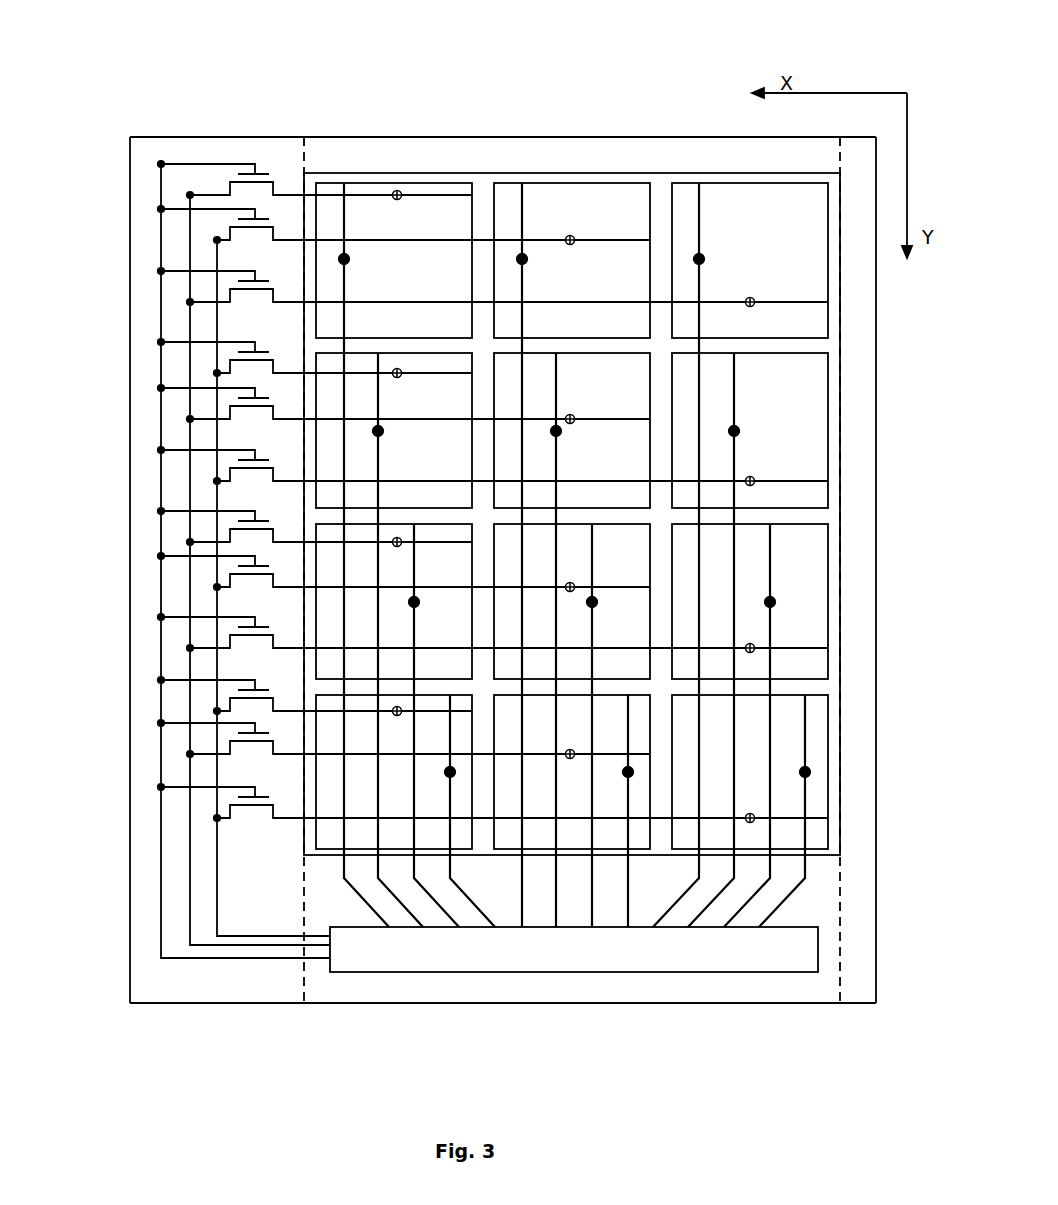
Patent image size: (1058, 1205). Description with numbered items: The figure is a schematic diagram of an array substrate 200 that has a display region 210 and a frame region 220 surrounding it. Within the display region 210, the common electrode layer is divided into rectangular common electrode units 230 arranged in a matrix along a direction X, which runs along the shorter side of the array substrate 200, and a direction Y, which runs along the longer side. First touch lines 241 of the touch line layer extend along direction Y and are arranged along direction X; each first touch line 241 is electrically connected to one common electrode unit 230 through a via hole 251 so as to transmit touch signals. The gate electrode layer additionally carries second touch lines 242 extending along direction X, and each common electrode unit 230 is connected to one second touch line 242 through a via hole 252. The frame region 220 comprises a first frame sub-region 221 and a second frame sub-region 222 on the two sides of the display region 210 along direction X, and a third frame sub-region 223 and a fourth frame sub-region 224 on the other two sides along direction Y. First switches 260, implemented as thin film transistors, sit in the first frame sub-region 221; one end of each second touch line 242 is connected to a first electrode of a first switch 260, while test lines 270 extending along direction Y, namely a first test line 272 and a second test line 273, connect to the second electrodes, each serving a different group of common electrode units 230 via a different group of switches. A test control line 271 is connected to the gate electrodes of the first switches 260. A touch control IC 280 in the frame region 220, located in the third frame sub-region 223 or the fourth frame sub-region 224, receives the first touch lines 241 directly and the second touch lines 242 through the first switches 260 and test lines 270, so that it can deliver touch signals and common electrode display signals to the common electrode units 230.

The array substrate 200 is at (485, 569).
The display region 210 is at (830, 405).
The frame region 220 is at (150, 977).
The first frame sub-region 221 is at (148, 482).
The second frame sub-region 222 is at (852, 315).
The third frame sub-region 223 is at (703, 158).
The fourth frame sub-region 224 is at (478, 1003).
The common electrode unit 230 is at (817, 765).
The first touch line 241 is at (769, 563).
The second touch line 242 is at (602, 239).
The via hole 251 is at (773, 603).
The via hole 252 is at (397, 195).
The first switch 260 is at (262, 172).
The test line 270 is at (174, 560).
The test control line 271 is at (162, 187).
The first test line 272 is at (190, 237).
The second test line 273 is at (217, 315).
The touch control IC 280 is at (642, 962).